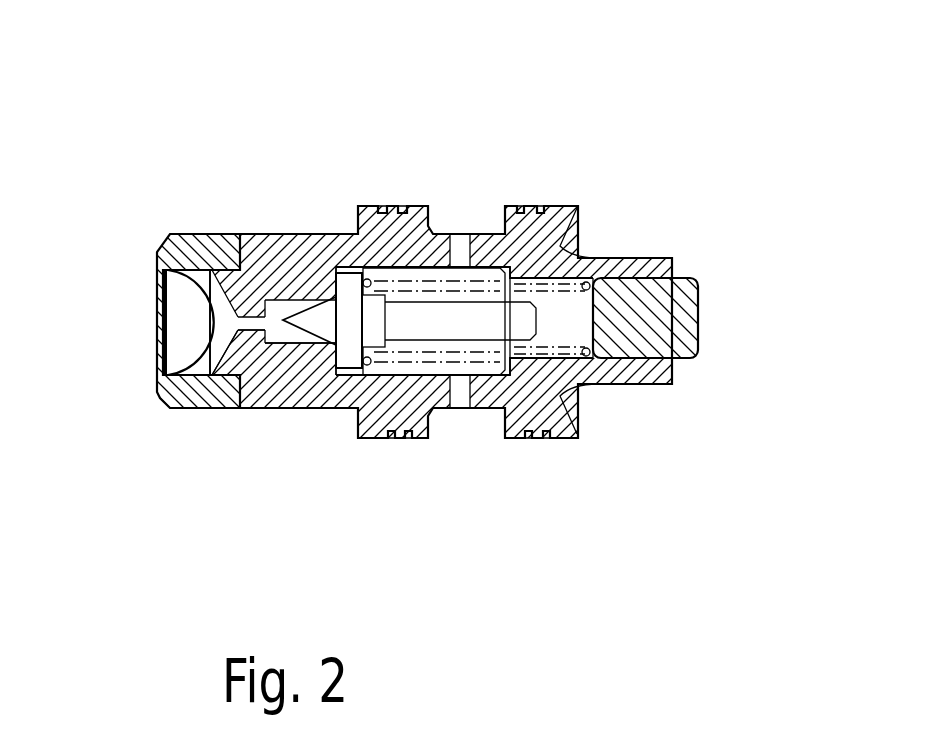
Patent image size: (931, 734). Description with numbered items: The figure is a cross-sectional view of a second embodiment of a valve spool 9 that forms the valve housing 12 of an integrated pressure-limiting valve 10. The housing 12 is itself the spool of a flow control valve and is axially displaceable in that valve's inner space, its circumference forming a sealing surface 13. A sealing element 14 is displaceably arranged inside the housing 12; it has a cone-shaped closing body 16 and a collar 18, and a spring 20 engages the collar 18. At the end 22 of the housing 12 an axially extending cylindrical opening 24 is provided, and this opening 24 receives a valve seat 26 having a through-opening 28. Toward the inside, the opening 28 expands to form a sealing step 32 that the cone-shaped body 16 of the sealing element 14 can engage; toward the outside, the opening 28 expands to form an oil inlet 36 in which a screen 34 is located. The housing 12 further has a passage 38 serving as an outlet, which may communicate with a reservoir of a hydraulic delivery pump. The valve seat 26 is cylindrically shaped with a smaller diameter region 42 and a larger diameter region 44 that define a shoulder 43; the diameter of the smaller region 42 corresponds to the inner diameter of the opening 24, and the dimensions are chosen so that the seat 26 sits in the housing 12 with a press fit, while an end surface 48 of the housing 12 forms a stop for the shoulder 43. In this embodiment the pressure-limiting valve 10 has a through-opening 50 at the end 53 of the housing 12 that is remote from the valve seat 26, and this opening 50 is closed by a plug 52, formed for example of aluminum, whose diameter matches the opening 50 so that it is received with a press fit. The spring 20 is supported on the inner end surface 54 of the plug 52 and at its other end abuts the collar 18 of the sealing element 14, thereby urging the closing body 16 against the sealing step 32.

The valve spool 9 is at (596, 254).
The pressure-limiting valve 10 is at (136, 138).
The valve housing 12 is at (432, 322).
The sealing surface 13 is at (371, 208).
The sealing element 14 is at (449, 262).
The cone-shaped closing body 16 is at (297, 312).
The collar 18 is at (349, 287).
The spring 20 is at (375, 282).
The end of the valve housing 22 is at (250, 264).
The cylindrical opening 24 is at (276, 345).
The valve seat 26 is at (170, 409).
The through-opening 28 is at (243, 316).
The sealing step 32 is at (346, 372).
The screen 34 is at (160, 352).
The oil inlet 36 is at (222, 350).
The passage 38 is at (460, 393).
The smaller diameter region 42 is at (303, 360).
The shoulder 43 is at (228, 380).
The larger diameter region 44 is at (180, 234).
The end surface 48 is at (247, 380).
The through-opening 50 is at (554, 332).
The plug 52 is at (699, 280).
The end of the valve housing 53 is at (671, 259).
The inner end surface 54 is at (638, 259).